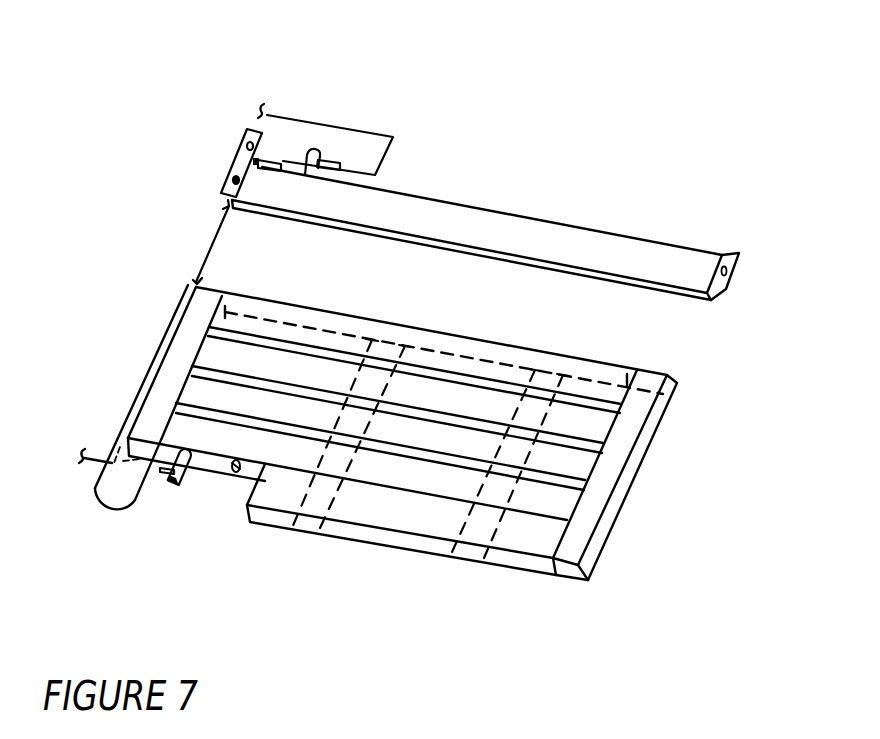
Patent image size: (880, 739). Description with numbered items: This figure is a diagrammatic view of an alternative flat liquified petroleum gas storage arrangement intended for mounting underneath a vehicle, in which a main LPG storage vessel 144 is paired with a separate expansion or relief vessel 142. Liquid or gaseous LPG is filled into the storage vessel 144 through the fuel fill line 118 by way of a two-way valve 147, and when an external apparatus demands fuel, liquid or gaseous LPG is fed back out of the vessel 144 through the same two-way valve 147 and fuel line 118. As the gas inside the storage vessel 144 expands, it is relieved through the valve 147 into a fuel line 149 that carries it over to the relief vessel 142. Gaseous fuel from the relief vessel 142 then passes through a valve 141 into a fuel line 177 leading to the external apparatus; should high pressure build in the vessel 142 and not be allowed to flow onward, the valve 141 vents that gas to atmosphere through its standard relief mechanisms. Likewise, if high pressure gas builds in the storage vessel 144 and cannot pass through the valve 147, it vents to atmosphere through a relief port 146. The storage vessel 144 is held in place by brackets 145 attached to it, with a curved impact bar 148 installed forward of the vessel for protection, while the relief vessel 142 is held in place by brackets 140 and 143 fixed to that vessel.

The fuel fill line 118 is at (100, 452).
The bracket 140 is at (247, 157).
The valve 141 is at (333, 162).
The storage vessel 142 is at (504, 198).
The bracket 143 is at (735, 253).
The LPG storage vessel 144 is at (373, 548).
The brackets 145 is at (463, 615).
The relief port 146 is at (232, 474).
The two-way valve 147 is at (175, 486).
The curved impact bar 148 is at (112, 497).
The fuel line 149 is at (128, 570).
The fuel line 177 is at (292, 114).